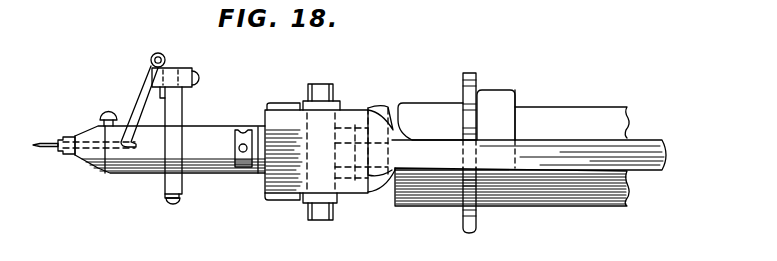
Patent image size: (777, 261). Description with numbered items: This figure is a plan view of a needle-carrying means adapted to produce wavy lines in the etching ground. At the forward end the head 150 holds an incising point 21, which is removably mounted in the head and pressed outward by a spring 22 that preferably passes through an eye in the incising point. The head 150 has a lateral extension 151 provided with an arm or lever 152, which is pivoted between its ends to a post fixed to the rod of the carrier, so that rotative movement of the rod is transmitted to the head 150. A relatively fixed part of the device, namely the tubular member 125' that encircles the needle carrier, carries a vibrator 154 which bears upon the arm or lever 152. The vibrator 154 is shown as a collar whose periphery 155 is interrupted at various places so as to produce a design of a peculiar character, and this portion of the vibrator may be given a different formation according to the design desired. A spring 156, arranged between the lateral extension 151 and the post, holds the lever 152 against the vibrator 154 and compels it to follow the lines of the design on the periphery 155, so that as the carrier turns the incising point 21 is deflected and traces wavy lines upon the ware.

The incising point 21 is at (50, 150).
The spring 22 is at (136, 97).
The head 150 is at (182, 117).
The lateral extension 151 is at (270, 197).
The arm or lever 152 is at (666, 142).
The vibrator 154 is at (477, 82).
The periphery 155 is at (473, 233).
The spring 156 is at (283, 100).
The tubular member 125' is at (430, 95).